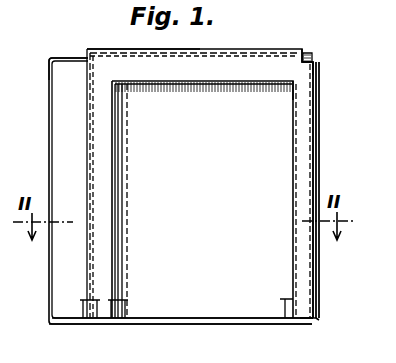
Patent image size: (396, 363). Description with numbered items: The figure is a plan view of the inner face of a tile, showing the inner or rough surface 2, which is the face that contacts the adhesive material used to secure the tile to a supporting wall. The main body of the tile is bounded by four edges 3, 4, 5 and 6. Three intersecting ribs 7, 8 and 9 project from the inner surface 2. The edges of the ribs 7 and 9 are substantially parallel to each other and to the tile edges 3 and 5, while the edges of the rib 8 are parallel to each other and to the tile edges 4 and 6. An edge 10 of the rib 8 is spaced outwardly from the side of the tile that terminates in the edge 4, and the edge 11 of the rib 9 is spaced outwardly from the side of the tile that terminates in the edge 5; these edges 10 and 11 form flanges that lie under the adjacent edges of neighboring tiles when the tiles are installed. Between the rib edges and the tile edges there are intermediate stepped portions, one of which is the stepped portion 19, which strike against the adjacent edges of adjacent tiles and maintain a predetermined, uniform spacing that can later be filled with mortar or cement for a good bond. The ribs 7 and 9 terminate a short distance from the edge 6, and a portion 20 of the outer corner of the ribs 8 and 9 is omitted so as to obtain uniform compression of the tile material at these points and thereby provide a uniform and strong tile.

The inner or rough surface 2 is at (216, 311).
The tile edge 3 is at (52, 143).
The tile edge 4 is at (67, 57).
The tile edge 5 is at (316, 319).
The tile edge 6 is at (156, 323).
The rib 7 is at (107, 213).
The rib 8 is at (201, 80).
The rib 9 is at (295, 199).
The edge of rib 8 10 is at (203, 173).
The edge of rib 9 11 is at (320, 128).
The intermediate stepped portion 19 is at (113, 52).
The omitted corner portion 20 is at (320, 61).